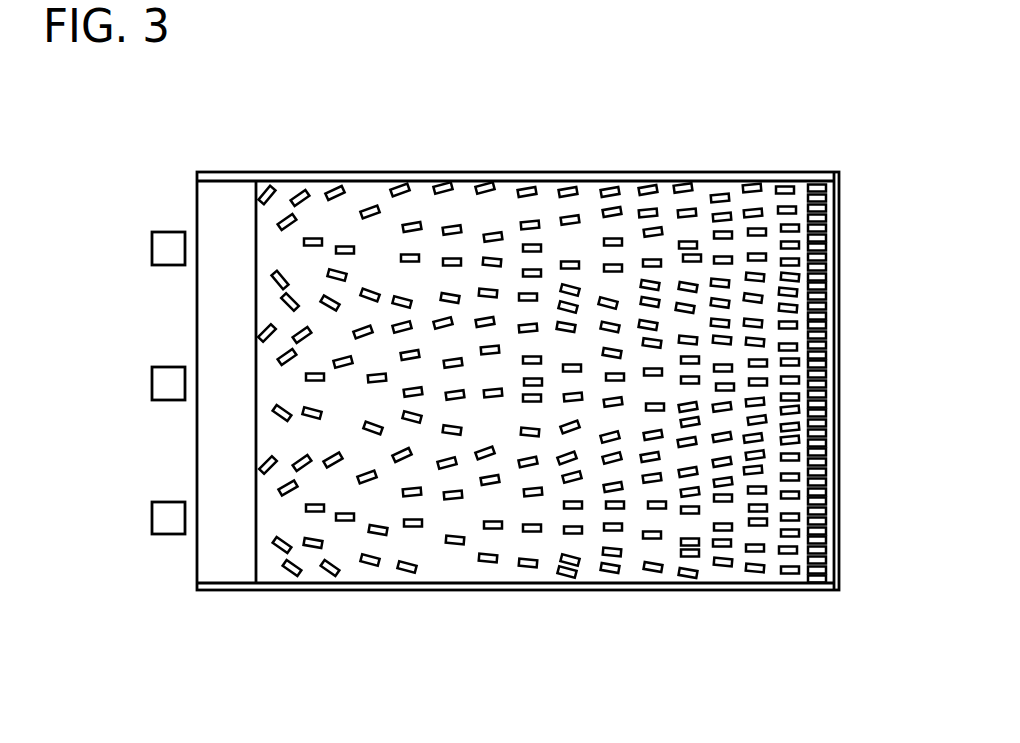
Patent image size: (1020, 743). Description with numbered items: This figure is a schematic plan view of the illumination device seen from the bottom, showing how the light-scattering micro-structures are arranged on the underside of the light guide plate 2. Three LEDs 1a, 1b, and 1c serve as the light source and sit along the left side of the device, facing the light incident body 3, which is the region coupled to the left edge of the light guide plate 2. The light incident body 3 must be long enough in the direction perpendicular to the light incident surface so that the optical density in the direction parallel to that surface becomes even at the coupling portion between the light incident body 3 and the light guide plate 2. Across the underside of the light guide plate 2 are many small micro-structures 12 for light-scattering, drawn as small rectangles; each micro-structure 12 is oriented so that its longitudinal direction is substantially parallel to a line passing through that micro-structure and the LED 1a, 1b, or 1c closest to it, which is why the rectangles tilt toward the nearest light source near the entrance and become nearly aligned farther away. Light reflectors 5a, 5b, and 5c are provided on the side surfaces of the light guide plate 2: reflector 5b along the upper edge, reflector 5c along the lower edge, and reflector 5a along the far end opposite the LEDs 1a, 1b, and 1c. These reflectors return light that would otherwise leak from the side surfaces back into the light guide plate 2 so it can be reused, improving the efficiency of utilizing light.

The LED 1a is at (152, 247).
The LED 1b is at (152, 385).
The LED 1c is at (152, 517).
The light guide plate 2 is at (364, 195).
The light incident body 3 is at (218, 202).
The light reflector 5a is at (840, 332).
The light reflector 5b is at (528, 174).
The light reflector 5c is at (545, 591).
The micro-structure for light-scattering 12 is at (624, 205).